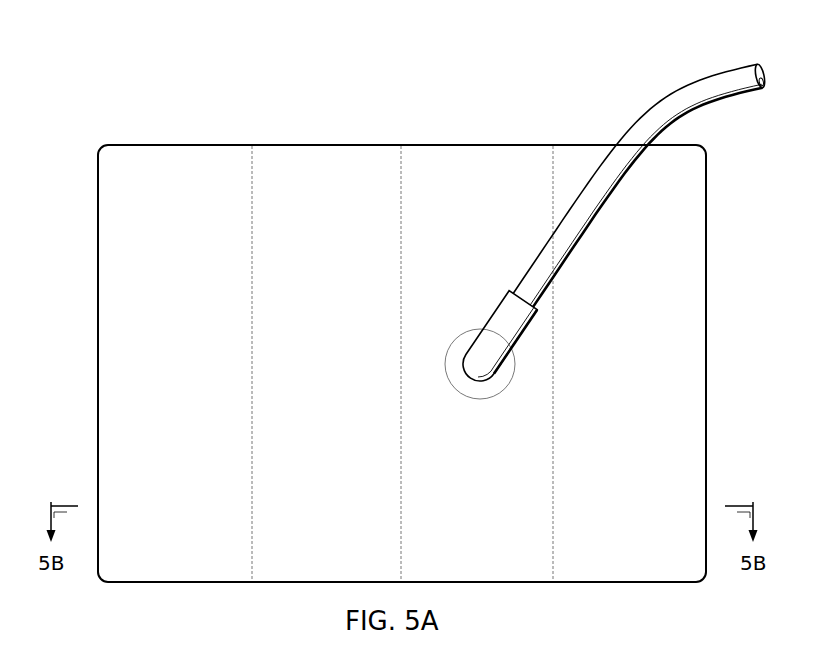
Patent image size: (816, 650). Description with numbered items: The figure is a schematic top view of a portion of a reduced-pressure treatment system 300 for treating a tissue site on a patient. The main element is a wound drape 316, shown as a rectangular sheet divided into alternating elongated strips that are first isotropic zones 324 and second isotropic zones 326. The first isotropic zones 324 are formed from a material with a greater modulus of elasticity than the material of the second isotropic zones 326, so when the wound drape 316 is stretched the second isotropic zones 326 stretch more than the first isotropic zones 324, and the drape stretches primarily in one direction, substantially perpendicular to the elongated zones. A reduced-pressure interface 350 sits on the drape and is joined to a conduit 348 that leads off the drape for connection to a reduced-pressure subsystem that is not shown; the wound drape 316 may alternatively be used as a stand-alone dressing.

The reduced-pressure treatment system 300 is at (125, 66).
The wound drape 316 is at (88, 271).
The first isotropic zones 324 is at (175, 153).
The second isotropic zones 326 is at (327, 153).
The conduit 348 is at (675, 90).
The reduced-pressure interface 350 is at (490, 317).